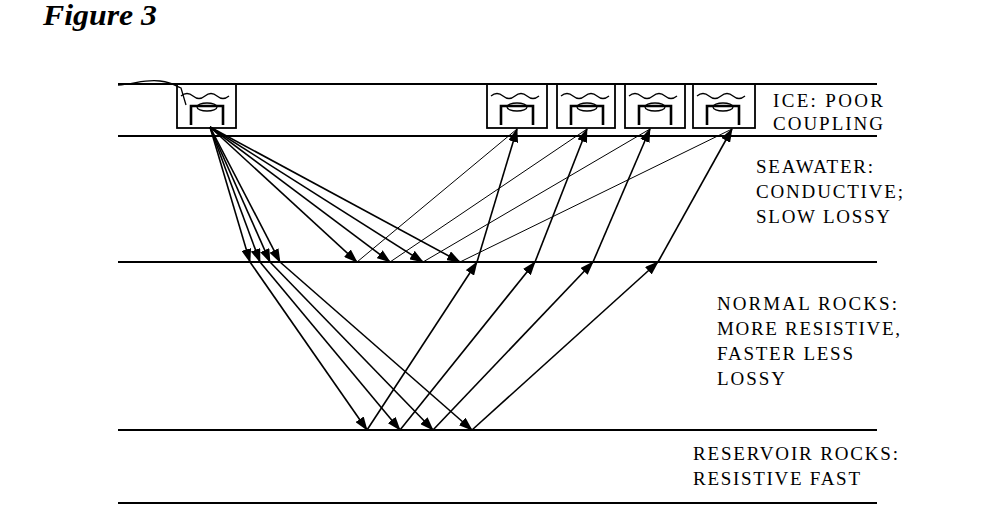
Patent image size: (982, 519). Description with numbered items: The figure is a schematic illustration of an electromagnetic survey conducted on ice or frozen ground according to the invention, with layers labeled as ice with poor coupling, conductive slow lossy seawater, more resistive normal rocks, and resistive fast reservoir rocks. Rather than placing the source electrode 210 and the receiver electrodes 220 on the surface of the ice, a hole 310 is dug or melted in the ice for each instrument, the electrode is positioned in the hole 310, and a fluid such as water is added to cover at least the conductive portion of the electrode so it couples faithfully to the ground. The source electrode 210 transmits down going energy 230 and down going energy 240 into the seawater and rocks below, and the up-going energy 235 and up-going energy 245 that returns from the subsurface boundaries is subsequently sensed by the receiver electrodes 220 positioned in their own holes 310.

The source electrode 210 is at (222, 96).
The receiver electrode 220 is at (586, 106).
The hole 310 is at (236, 118).
The down going energy 230 is at (224, 192).
The down going energy 240 is at (318, 176).
The up-going energy 245 is at (647, 176).
The up-going energy 235 is at (545, 370).